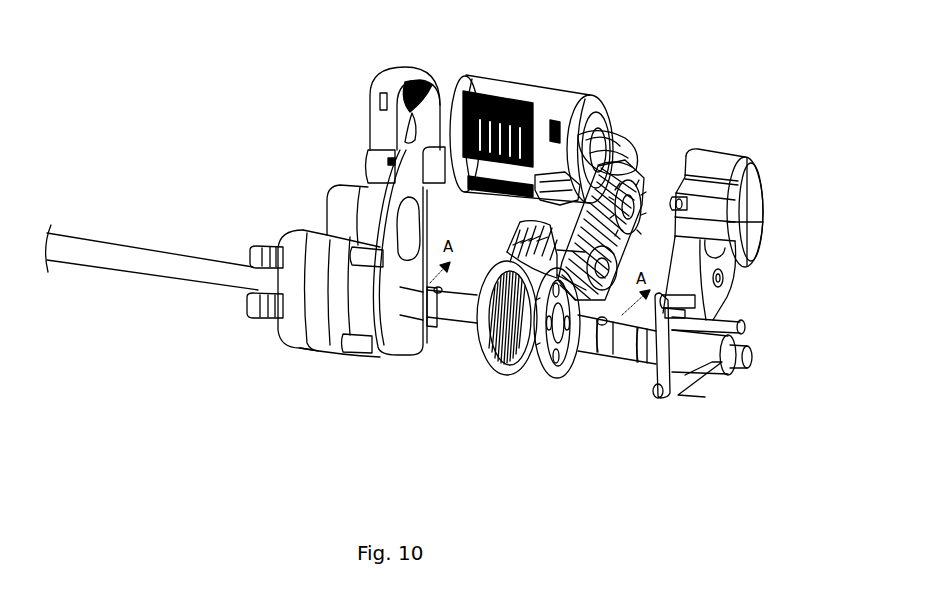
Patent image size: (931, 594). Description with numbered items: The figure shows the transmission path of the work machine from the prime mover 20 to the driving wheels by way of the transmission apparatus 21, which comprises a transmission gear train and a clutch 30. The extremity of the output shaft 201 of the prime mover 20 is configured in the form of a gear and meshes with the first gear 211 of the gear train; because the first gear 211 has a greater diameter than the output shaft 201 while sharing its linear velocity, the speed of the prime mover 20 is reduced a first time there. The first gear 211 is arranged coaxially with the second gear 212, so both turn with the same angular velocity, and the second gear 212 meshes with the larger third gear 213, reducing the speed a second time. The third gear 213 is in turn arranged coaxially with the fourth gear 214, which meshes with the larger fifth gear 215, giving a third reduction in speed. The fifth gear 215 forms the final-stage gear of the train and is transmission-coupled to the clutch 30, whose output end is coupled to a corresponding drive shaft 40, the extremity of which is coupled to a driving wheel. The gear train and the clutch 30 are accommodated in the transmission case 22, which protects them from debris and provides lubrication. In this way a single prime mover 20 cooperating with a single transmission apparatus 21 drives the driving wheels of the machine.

The prime mover 20 is at (543, 88).
The output shaft 201 is at (613, 145).
The transmission apparatus 21 is at (654, 151).
The first gear 211 is at (645, 188).
The second gear 212 is at (575, 205).
The third gear 213 is at (608, 320).
The fourth gear 214 is at (497, 250).
The fifth gear 215 is at (507, 378).
The transmission case 22 is at (376, 125).
The clutch 30 is at (475, 360).
The drive shaft 40 is at (148, 271).